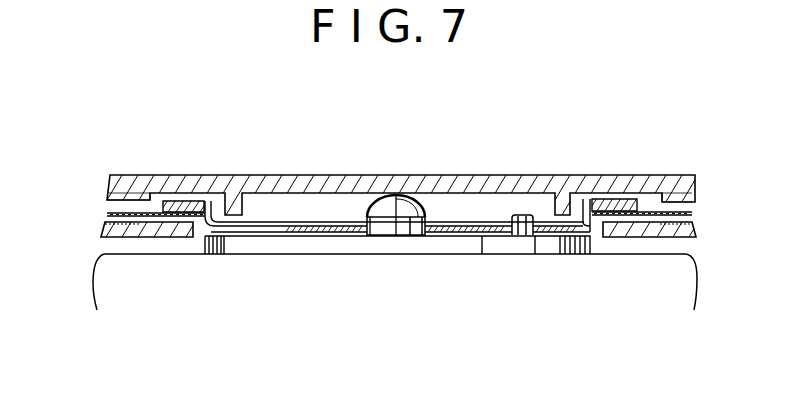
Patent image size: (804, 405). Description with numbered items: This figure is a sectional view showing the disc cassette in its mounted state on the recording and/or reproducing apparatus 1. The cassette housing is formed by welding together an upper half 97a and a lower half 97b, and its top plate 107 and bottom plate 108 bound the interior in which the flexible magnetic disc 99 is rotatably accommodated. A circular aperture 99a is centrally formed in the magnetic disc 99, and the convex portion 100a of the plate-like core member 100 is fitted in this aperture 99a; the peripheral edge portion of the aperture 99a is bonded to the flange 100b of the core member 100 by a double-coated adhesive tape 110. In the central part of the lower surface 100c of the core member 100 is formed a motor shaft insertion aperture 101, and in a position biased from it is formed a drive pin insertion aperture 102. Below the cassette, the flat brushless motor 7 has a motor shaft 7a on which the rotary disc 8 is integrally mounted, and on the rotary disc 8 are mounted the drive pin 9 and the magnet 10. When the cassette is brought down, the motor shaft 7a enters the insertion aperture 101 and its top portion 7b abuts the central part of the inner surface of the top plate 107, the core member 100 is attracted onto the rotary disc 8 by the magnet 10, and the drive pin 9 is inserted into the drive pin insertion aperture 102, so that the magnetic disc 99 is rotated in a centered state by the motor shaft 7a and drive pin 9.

The recording and/or reproducing apparatus 1 is at (509, 152).
The flat brushless motor 7 is at (93, 283).
The motor shaft 7a is at (386, 230).
The top portion 7b is at (394, 178).
The rotary disc 8 is at (245, 243).
The drive pin 9 is at (533, 236).
The magnet 10 is at (344, 237).
The upper half 97a is at (147, 177).
The lower half 97b is at (104, 236).
The flexible magnetic disc 99 is at (630, 177).
The circular aperture 99a is at (576, 177).
The core member 100 is at (336, 178).
The convex portion 100a is at (592, 237).
The flange 100b is at (188, 178).
The lower surface 100c is at (285, 236).
The motor shaft insertion aperture 101 is at (423, 236).
The drive pin insertion aperture 102 is at (507, 236).
The top plate 107 is at (462, 177).
The bottom plate 108 is at (149, 238).
The double-coated adhesive tape 110 is at (183, 220).